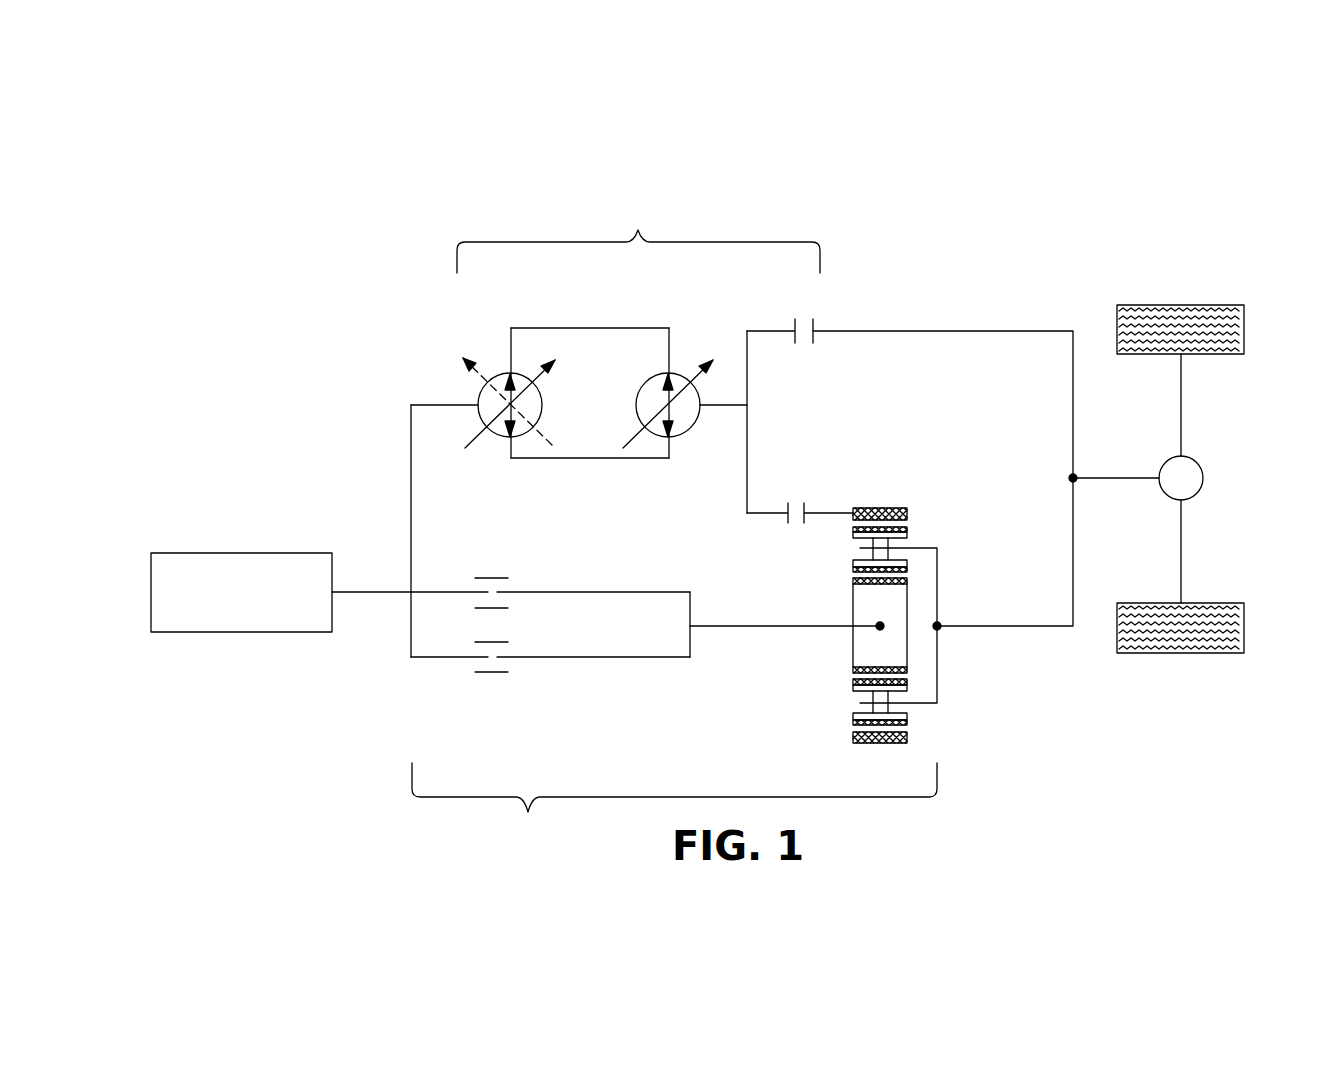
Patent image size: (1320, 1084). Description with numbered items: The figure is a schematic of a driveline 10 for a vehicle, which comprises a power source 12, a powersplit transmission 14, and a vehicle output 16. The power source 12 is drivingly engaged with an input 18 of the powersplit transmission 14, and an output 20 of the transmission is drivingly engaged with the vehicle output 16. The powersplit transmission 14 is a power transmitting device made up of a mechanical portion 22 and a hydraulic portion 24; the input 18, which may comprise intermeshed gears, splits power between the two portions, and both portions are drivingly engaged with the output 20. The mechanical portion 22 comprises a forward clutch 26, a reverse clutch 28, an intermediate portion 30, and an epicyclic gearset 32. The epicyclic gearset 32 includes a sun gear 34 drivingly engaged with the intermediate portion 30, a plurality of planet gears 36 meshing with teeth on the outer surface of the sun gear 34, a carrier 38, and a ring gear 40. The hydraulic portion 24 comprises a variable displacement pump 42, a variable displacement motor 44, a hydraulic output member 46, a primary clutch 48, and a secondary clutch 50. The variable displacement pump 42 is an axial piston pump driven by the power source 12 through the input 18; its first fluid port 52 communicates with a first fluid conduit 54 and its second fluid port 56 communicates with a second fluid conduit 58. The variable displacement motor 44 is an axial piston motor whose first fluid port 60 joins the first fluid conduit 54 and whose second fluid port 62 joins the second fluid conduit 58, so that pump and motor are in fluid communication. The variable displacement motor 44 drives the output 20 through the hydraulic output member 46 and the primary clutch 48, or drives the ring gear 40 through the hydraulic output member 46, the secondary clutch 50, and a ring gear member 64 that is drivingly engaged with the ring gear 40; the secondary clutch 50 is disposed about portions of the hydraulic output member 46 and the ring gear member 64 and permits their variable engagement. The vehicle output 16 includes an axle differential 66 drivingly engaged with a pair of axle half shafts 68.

The driveline 10 is at (1014, 173).
The power source 12 is at (240, 553).
The powersplit transmission 14 is at (339, 346).
The vehicle output 16 is at (1208, 283).
The input 18 is at (411, 503).
The output 20 is at (1073, 400).
The mechanical portion 22 is at (674, 685).
The hydraulic portion 24 is at (615, 356).
The forward clutch 26 is at (492, 578).
The reverse clutch 28 is at (492, 672).
The intermediate portion 30 is at (762, 626).
The epicyclic gearset 32 is at (925, 448).
The sun gear 34 is at (862, 603).
The planet gears 36 is at (907, 531).
The carrier 38 is at (937, 582).
The ring gear 40 is at (880, 508).
The variable displacement pump 42 is at (497, 370).
The variable displacement motor 44 is at (700, 428).
The hydraulic output member 46 is at (747, 436).
The primary clutch 48 is at (814, 330).
The secondary clutch 50 is at (786, 524).
The first fluid port 52 is at (515, 378).
The first fluid conduit 54 is at (590, 328).
The second fluid port 56 is at (508, 440).
The second fluid conduit 58 is at (590, 458).
The first fluid port 60 is at (676, 375).
The second fluid port 62 is at (673, 440).
The ring gear member 64 is at (824, 513).
The axle differential 66 is at (1203, 480).
The axle half shafts 68 is at (1181, 403).